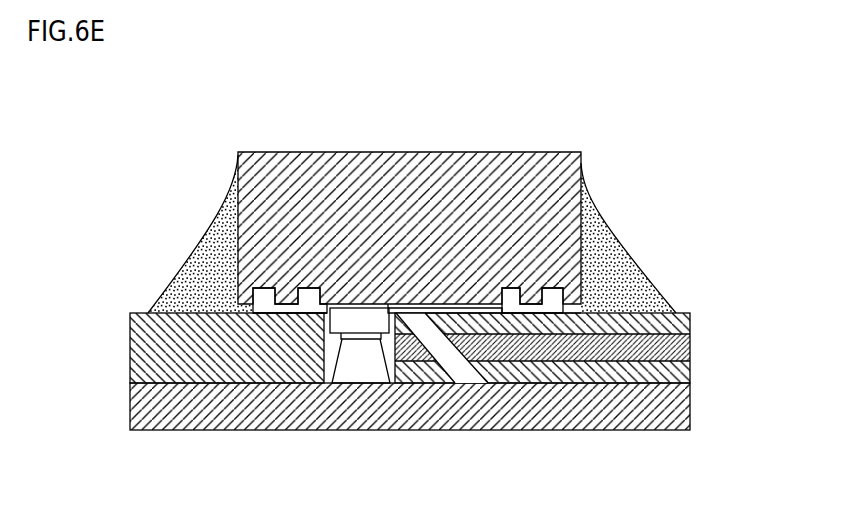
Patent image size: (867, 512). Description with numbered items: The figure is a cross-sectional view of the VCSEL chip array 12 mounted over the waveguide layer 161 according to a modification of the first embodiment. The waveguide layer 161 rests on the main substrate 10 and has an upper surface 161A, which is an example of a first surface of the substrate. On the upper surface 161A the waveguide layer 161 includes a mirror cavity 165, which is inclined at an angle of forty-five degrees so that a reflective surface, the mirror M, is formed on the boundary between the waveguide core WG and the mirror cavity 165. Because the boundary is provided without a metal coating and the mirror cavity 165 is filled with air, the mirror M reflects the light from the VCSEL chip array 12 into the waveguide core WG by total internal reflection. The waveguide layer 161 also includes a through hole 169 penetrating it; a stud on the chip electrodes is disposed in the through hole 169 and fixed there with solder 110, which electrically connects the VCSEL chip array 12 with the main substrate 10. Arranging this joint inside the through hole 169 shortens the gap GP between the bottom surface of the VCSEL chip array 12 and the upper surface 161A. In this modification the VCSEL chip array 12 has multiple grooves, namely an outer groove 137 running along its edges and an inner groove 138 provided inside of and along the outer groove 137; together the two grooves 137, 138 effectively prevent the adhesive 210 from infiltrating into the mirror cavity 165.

The main substrate 10 is at (130, 407).
The VCSEL chip array 12 is at (560, 151).
The solder 110 is at (398, 368).
The outer groove 137 is at (243, 297).
The inner groove 138 is at (313, 302).
The waveguide layer 161 is at (130, 365).
The upper surface 161A is at (620, 306).
The mirror cavity 165 is at (460, 347).
The through hole 169 is at (336, 368).
The adhesive 210 is at (203, 237).
The gap GP is at (596, 305).
The mirror M is at (470, 353).
The waveguide core WG is at (691, 348).